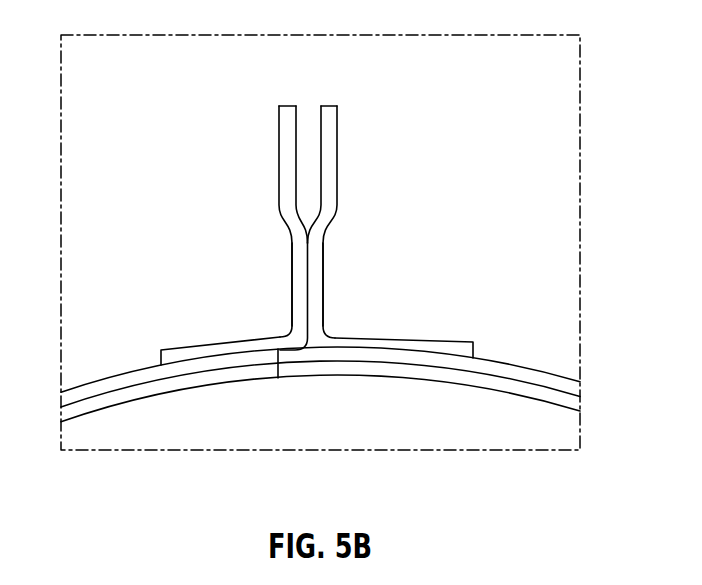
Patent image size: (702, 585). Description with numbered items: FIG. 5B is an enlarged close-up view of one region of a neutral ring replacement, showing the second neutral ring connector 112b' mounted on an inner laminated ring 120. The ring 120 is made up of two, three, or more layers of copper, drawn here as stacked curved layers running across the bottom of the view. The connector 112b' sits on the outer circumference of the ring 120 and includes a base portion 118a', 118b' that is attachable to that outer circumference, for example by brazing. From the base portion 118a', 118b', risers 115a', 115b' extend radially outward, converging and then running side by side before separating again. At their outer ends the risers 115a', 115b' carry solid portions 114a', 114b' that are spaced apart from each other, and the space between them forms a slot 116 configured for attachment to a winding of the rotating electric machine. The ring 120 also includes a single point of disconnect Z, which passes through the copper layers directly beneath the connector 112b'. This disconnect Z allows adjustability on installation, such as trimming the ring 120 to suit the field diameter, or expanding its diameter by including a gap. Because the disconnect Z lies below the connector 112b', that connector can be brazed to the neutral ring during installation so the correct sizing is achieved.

The second neutral ring connector 112b' is at (274, 244).
The solid portion 114a' is at (241, 221).
The solid portion 114b' is at (375, 222).
The riser 115a' is at (247, 292).
The riser 115b' is at (376, 280).
The slot 116 is at (309, 133).
The base portion 118a' is at (211, 321).
The base portion 118b' is at (408, 314).
The inner laminated ring 120 is at (508, 364).
The point of disconnect Z is at (277, 382).